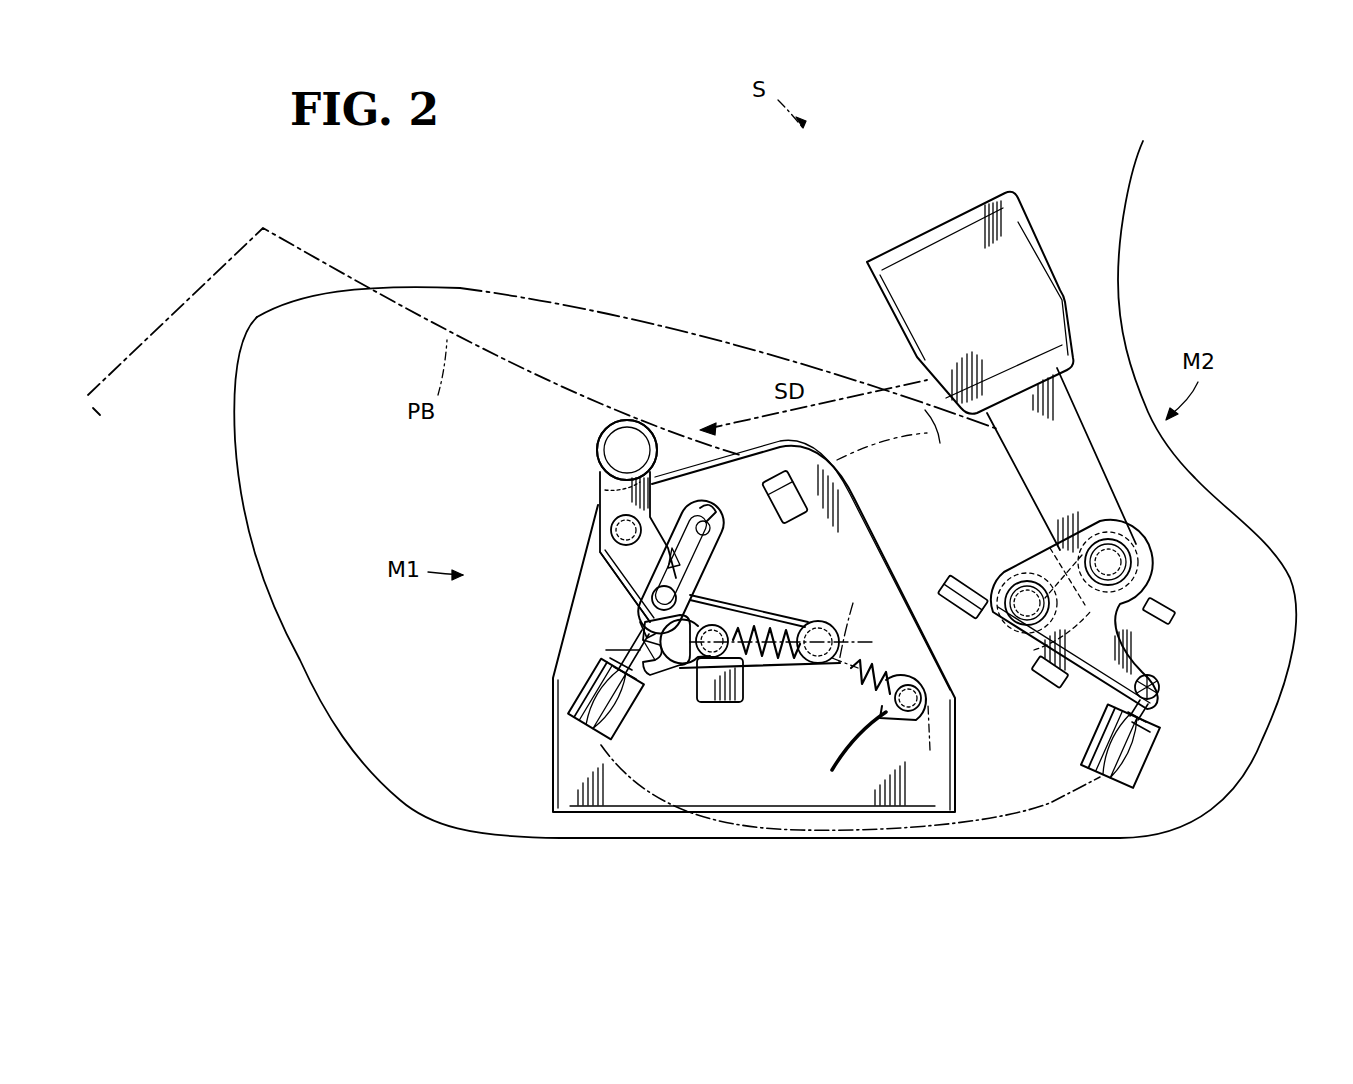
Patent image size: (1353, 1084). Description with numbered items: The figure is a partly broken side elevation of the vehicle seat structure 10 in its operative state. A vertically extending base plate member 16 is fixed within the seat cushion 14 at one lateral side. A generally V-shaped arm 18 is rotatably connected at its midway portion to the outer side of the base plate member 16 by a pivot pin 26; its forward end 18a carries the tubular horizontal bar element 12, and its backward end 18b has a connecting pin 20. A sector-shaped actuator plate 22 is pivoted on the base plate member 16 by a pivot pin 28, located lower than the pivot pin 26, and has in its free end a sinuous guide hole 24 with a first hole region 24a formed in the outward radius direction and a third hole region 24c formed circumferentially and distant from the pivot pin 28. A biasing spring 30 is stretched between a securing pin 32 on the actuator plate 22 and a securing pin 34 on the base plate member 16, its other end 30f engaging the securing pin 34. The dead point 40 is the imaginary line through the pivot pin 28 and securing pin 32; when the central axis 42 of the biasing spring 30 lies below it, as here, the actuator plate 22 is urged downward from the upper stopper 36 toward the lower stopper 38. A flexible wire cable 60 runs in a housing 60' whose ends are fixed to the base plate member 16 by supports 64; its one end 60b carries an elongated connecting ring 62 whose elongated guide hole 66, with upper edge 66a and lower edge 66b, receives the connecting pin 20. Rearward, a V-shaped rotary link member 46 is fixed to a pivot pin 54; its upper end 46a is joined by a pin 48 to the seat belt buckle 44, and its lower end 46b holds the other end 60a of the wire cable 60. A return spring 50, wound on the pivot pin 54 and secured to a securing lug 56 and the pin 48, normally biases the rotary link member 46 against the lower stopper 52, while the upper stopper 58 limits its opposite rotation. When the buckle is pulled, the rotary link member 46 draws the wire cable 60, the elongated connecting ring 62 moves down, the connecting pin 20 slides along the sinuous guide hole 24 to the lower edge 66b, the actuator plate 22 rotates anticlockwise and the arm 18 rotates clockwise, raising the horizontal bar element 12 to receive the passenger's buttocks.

The pedal device 10 is at (700, 205).
The horizontal bar element 12 is at (632, 419).
The seat cushion 14 is at (577, 306).
The base plate member 16 is at (869, 527).
The arm 18 is at (601, 549).
The forward end 18a is at (604, 480).
The backward end 18b is at (618, 564).
The connecting pin 20 is at (690, 600).
The actuator plate 22 is at (773, 612).
The sinuous guide hole 24 is at (688, 650).
The first hole region 24a is at (666, 665).
The third hole region 24c is at (661, 600).
The pivot pin 26 is at (610, 526).
The pivot pin 28 is at (830, 665).
The biasing spring 30 is at (880, 668).
The another end of spring 30f is at (836, 748).
The securing pin 32 is at (716, 624).
The securing pin 34 is at (892, 716).
The upper stopper 36 is at (797, 497).
The lower stopper 38 is at (730, 697).
The dead point 40 is at (853, 620).
The central axis 42 is at (929, 742).
The seat belt buckle 44 is at (1038, 247).
The rotary link member 46 is at (1096, 688).
The upper end 46a is at (1132, 545).
The lower end 46b is at (1160, 689).
The pin 48 is at (1138, 566).
The return spring 50 is at (1032, 643).
The lower stopper 52 is at (1045, 682).
The pivot pin 54 is at (1024, 600).
The securing lug 56 is at (952, 596).
The upper stopper 58 is at (1172, 605).
The wire cable 60 is at (850, 823).
The housing 60' is at (856, 735).
The another end of wire cable 60a is at (1150, 708).
The one end of wire cable 60b is at (630, 650).
The elongated connecting ring 62 is at (707, 568).
The support 64 is at (585, 690).
The elongated guide hole 66 is at (716, 532).
The upper edge 66a is at (710, 512).
The lower edge 66b is at (640, 627).